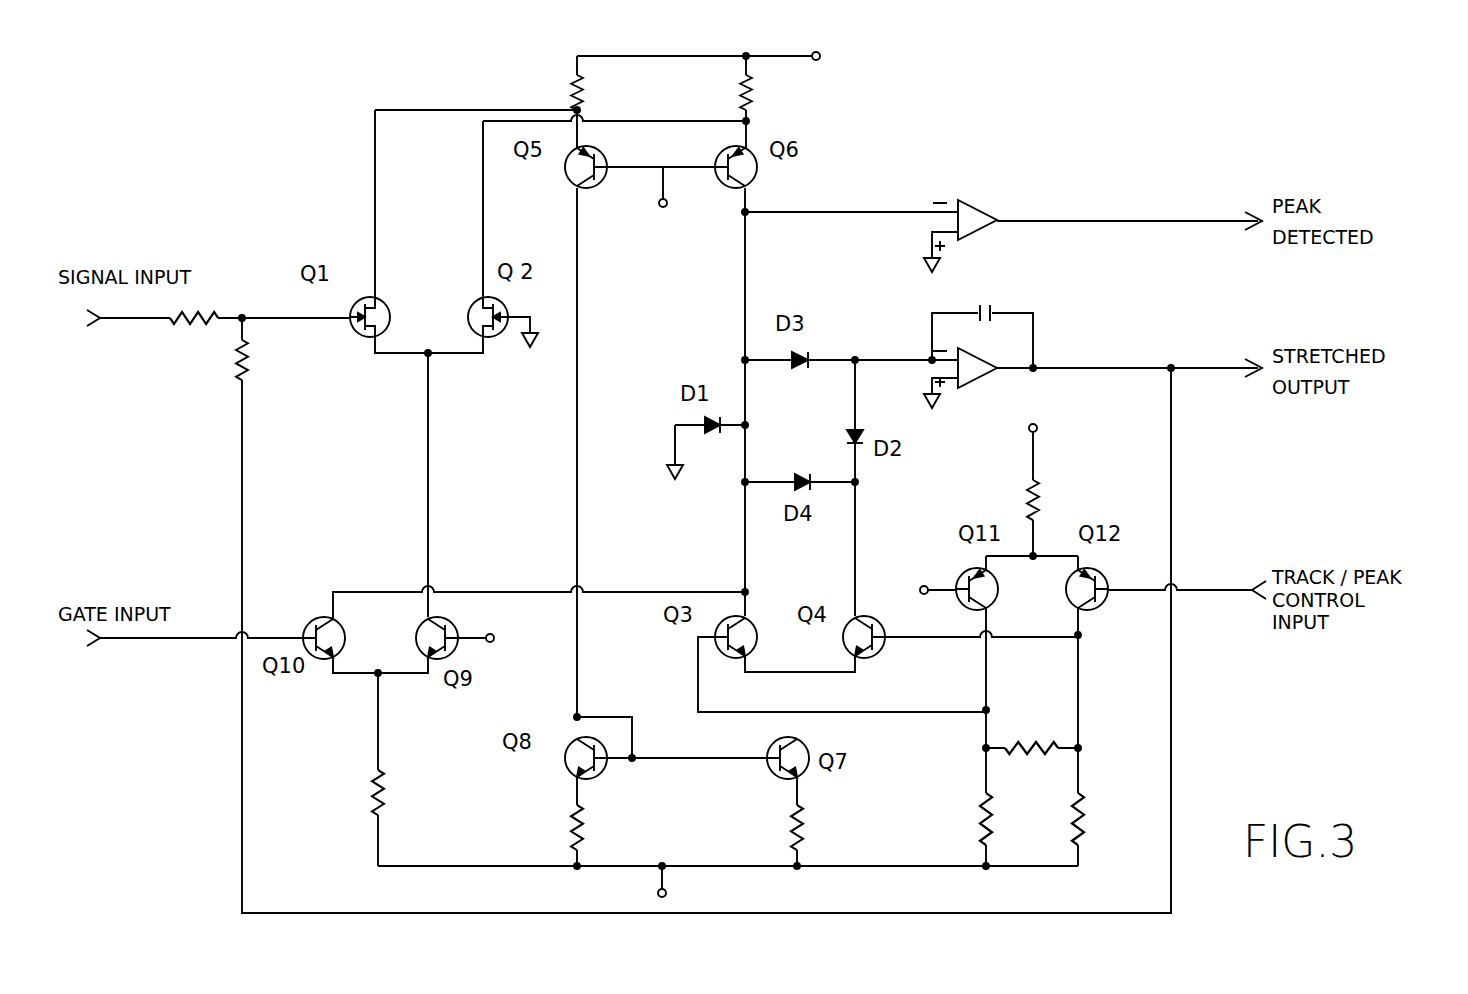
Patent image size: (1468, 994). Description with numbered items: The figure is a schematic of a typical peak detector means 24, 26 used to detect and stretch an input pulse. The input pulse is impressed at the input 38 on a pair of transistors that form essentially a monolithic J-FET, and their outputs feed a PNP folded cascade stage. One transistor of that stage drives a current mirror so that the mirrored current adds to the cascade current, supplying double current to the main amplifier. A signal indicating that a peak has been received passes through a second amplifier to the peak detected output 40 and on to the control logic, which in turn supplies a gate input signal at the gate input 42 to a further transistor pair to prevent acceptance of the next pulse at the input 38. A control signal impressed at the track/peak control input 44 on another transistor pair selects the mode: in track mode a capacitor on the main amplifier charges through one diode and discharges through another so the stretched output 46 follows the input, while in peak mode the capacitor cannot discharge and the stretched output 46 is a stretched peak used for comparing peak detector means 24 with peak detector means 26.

The peak detector means 24 is at (1003, 140).
The peak detector means 26 is at (1005, 247).
The input 38 is at (295, 320).
The peak detected output 40 is at (1182, 221).
The gate input 42 is at (210, 638).
The track/peak control input 44 is at (1225, 590).
The stretched output 46 is at (1190, 367).